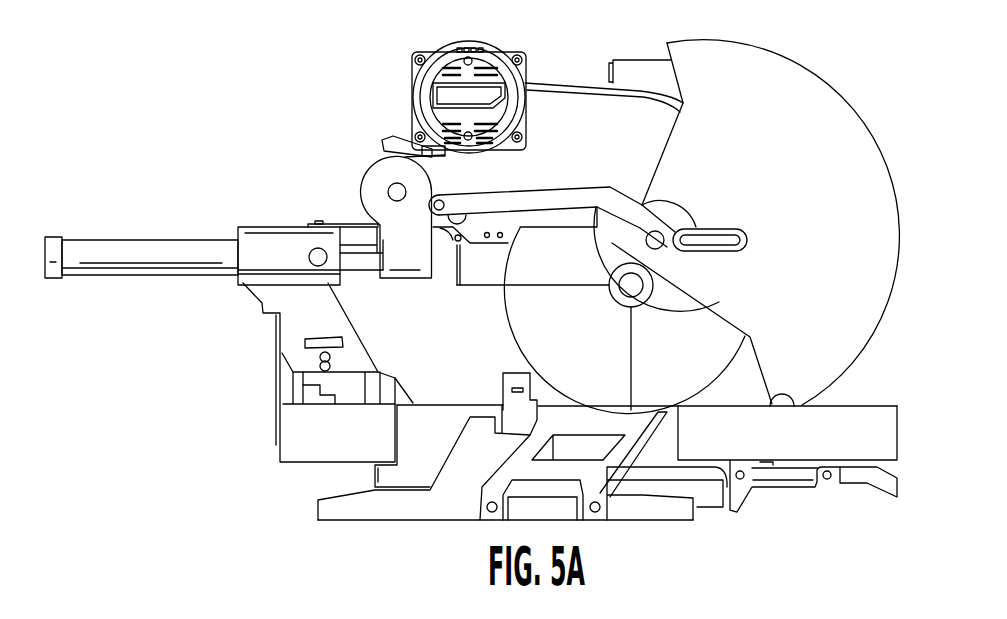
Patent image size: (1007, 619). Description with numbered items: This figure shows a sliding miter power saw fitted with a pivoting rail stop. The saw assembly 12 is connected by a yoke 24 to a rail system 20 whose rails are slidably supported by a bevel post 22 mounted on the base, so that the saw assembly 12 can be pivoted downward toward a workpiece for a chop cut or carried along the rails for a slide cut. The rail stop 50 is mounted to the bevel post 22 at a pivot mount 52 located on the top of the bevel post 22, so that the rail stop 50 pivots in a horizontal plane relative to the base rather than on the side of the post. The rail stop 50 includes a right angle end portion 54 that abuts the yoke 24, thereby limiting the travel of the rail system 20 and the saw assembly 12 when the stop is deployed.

The saw assembly 12 is at (562, 83).
The rail system 20 is at (128, 258).
The bevel post 22 is at (262, 303).
The yoke 24 is at (375, 177).
The rail stop 50 is at (352, 226).
The pivot mount 52 is at (322, 226).
The right angle end portion 54 is at (384, 243).